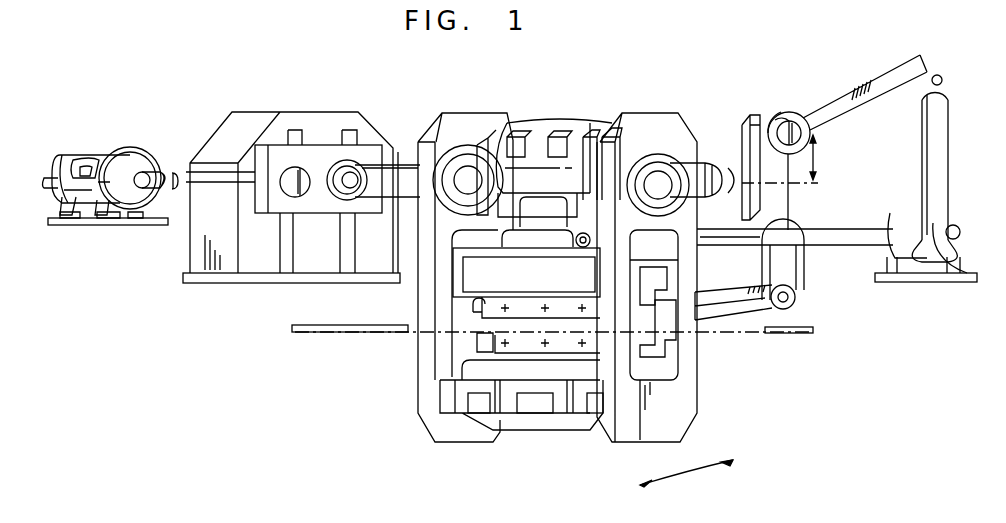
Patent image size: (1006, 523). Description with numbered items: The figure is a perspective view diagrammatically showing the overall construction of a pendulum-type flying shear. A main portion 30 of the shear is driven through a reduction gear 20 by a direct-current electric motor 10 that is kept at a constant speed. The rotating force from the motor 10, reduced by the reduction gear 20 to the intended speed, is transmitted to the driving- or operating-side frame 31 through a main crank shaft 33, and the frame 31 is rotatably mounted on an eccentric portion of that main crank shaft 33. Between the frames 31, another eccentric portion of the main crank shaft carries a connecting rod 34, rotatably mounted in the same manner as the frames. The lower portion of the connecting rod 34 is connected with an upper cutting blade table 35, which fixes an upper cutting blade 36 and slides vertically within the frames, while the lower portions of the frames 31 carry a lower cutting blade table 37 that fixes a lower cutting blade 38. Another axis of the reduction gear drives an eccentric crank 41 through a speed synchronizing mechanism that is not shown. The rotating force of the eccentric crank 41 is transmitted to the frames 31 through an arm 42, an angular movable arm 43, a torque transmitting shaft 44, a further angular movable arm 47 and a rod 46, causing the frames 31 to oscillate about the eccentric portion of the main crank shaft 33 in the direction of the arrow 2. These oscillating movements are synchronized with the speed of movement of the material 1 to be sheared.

The material to be sheared 1 is at (349, 332).
The arrow 2 is at (700, 482).
The direct-current electric motor 10 is at (110, 148).
The reduction gear 20 is at (296, 110).
The main portion 30 is at (579, 72).
The frame 31 is at (470, 113).
The main crank shaft 33 is at (715, 165).
The connecting rod 34 is at (570, 122).
The upper cutting blade table 35 is at (526, 272).
The upper cutting blade 36 is at (482, 307).
The lower cutting blade table 37 is at (565, 378).
The lower cutting blade 38 is at (495, 340).
The eccentric crank 41 is at (780, 196).
The arm 42 is at (852, 104).
The angular movable arm 43 is at (945, 155).
The torque transmitting shaft 44 is at (868, 230).
The rod 46 is at (718, 300).
The angular movable arm 47 is at (792, 270).